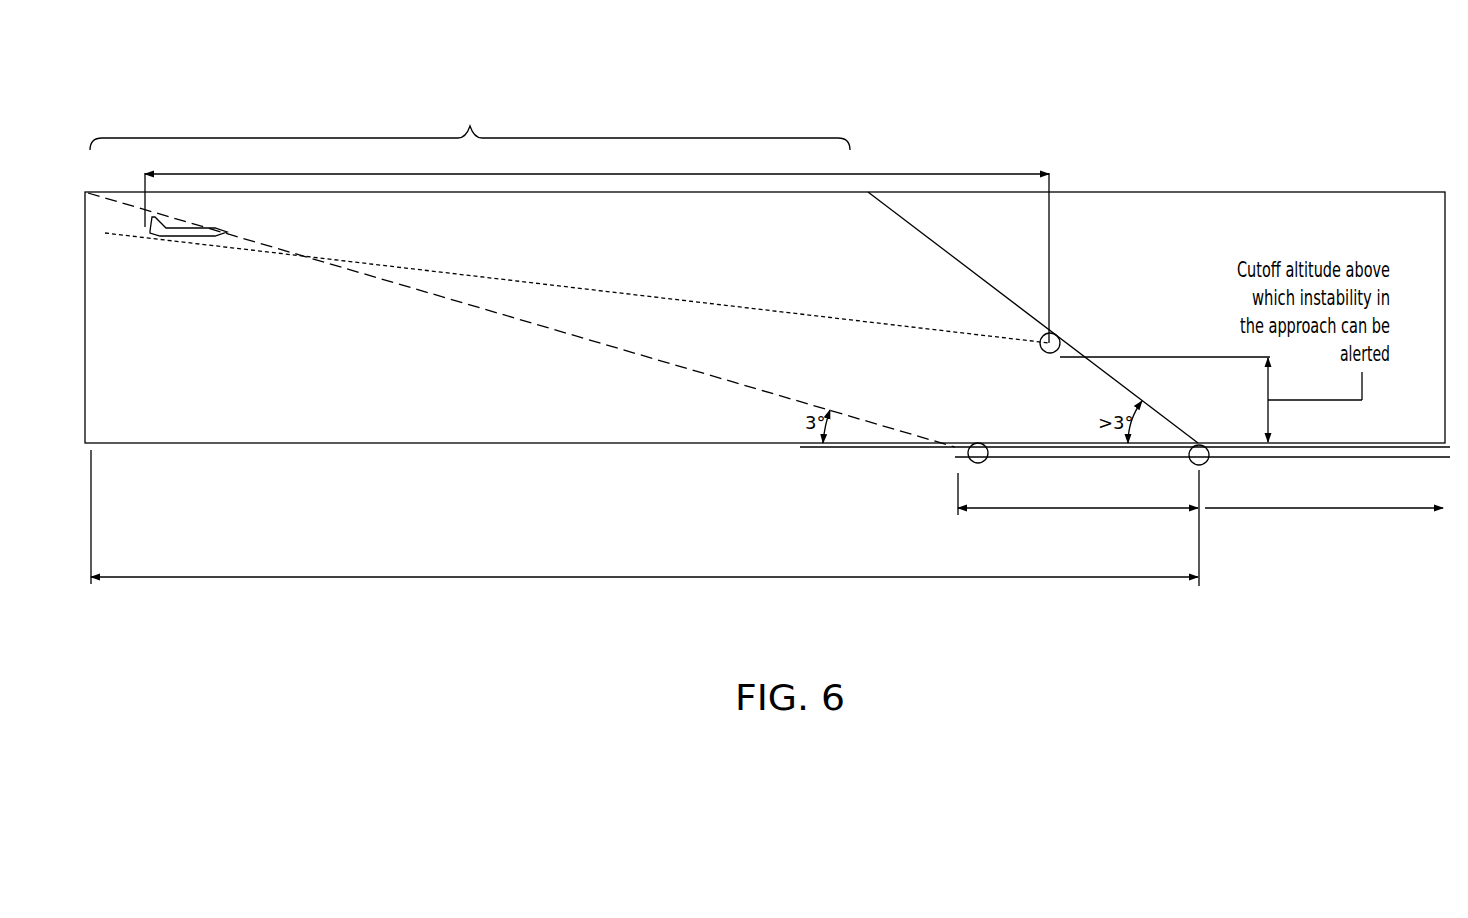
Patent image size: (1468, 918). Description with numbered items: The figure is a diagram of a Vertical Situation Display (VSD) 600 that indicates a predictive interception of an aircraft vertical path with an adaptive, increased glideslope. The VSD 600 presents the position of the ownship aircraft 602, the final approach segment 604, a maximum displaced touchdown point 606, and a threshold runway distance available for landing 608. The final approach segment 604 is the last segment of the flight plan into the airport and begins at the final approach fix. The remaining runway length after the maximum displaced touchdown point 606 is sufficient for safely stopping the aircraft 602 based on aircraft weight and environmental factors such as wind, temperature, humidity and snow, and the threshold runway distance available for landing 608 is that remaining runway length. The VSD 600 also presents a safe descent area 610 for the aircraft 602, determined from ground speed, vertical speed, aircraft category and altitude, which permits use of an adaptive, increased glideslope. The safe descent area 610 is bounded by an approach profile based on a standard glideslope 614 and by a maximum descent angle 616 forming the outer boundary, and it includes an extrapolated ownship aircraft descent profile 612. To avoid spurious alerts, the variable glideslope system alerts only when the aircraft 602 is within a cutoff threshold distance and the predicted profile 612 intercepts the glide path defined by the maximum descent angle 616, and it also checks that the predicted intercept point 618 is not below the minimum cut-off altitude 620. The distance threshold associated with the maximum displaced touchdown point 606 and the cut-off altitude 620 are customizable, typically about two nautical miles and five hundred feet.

The Vertical Situation Display (VSD) 600 is at (1262, 112).
The ownship aircraft 602 is at (188, 237).
The final approach segment 604 is at (630, 577).
The maximum displaced touchdown point 606 is at (1068, 508).
The threshold runway distance available for landing 608 is at (1318, 508).
The safe descent area 610 is at (470, 126).
The extrapolated ownship aircraft descent profile 612 is at (747, 307).
The standard glideslope 614 is at (447, 295).
The maximum descent angle 616 is at (905, 233).
The predicted intercept point 618 is at (1062, 347).
The minimum cut-off altitude 620 is at (1266, 410).